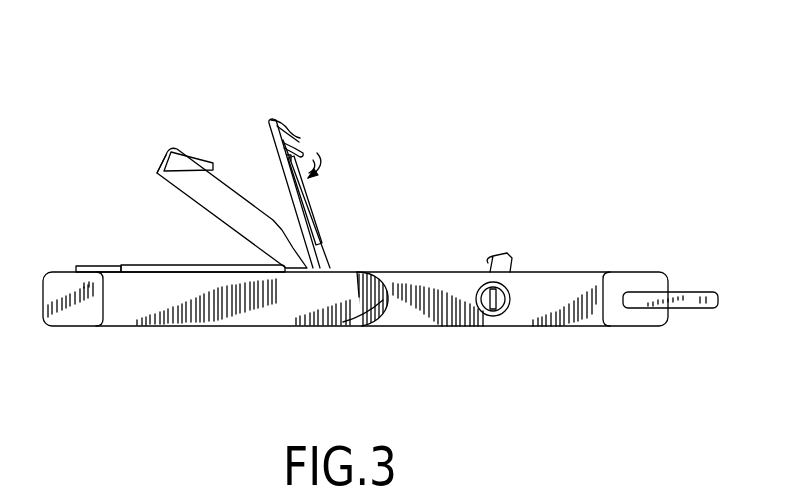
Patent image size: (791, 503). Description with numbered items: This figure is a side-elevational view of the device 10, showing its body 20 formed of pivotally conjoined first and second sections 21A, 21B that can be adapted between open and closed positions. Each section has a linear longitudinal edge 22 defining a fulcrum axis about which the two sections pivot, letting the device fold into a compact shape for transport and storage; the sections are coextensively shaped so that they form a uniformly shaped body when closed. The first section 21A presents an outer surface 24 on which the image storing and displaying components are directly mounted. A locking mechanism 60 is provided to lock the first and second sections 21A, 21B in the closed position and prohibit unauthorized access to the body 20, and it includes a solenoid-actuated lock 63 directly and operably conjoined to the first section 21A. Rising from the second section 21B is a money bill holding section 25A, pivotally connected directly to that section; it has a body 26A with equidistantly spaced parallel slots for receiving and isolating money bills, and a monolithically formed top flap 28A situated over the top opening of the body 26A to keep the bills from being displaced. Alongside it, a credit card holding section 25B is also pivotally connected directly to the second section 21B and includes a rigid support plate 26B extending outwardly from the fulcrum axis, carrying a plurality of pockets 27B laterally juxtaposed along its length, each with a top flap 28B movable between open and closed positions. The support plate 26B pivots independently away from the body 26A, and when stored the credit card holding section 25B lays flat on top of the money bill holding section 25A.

The device 10 is at (548, 114).
The body 20 is at (363, 270).
The first section 21A is at (622, 318).
The second section 21B is at (118, 318).
The linear longitudinal edge 22 is at (350, 326).
The outer surface 24 is at (240, 327).
The money bill holding section 25A is at (181, 142).
The credit card holding section 25B is at (243, 123).
The body 26A is at (215, 176).
The rigid support plate 26B is at (300, 136).
The pockets 27B is at (306, 206).
The top flap 28A is at (156, 172).
The top flap 28B is at (303, 150).
The locking mechanism 60 is at (512, 297).
The solenoid-actuated lock 63 is at (497, 312).